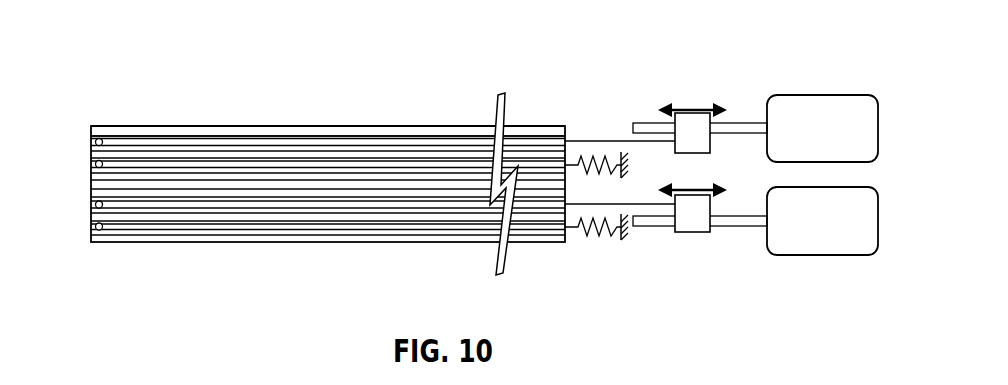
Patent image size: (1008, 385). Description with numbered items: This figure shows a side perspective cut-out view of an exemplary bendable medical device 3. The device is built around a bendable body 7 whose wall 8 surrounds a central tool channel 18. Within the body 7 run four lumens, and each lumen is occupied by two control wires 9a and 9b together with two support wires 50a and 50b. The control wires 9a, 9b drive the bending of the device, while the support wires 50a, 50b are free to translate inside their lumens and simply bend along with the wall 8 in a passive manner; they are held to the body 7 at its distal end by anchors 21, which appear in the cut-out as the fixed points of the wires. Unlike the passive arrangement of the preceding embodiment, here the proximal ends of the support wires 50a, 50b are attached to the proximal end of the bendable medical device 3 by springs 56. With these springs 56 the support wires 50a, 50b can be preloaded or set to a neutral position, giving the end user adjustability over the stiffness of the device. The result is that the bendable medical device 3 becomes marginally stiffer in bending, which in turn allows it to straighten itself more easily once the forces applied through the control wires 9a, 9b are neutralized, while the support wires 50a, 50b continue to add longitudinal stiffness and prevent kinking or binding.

The bendable medical device 3 is at (633, 37).
The bendable body 7 is at (127, 126).
The wall 8 is at (408, 133).
The control wire 9a is at (195, 145).
The control wire 9b is at (257, 207).
The support wire 50a is at (284, 167).
The support wire 50b is at (315, 228).
The central tool channel 18 is at (192, 183).
The anchor 21 is at (96, 203).
The spring 56 is at (613, 236).